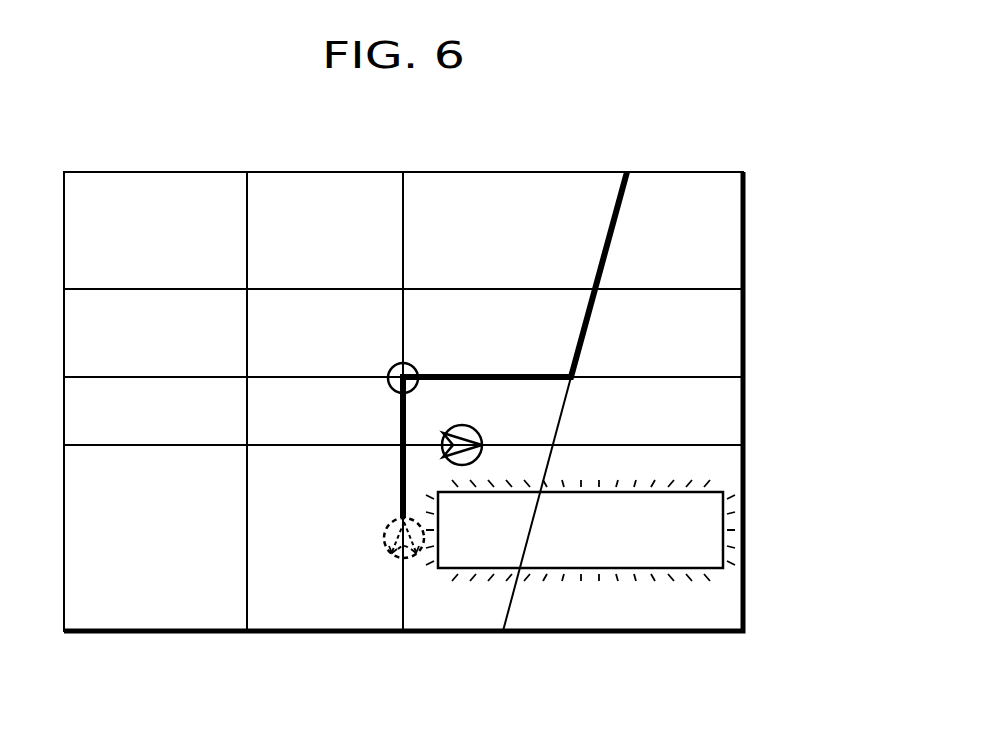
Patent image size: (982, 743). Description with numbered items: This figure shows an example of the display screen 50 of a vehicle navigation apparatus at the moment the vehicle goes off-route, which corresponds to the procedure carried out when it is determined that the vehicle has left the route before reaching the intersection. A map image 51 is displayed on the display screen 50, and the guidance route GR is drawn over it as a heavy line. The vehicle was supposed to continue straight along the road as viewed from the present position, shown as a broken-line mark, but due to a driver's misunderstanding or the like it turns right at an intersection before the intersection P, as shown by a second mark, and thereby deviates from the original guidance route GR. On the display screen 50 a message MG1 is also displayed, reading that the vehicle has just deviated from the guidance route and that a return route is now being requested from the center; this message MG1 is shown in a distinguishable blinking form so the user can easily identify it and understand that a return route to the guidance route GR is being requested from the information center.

The display screen 50 is at (287, 161).
The map image 51 is at (653, 638).
The intersection P is at (414, 361).
The guidance route GR is at (602, 236).
The message MG1 is at (724, 520).